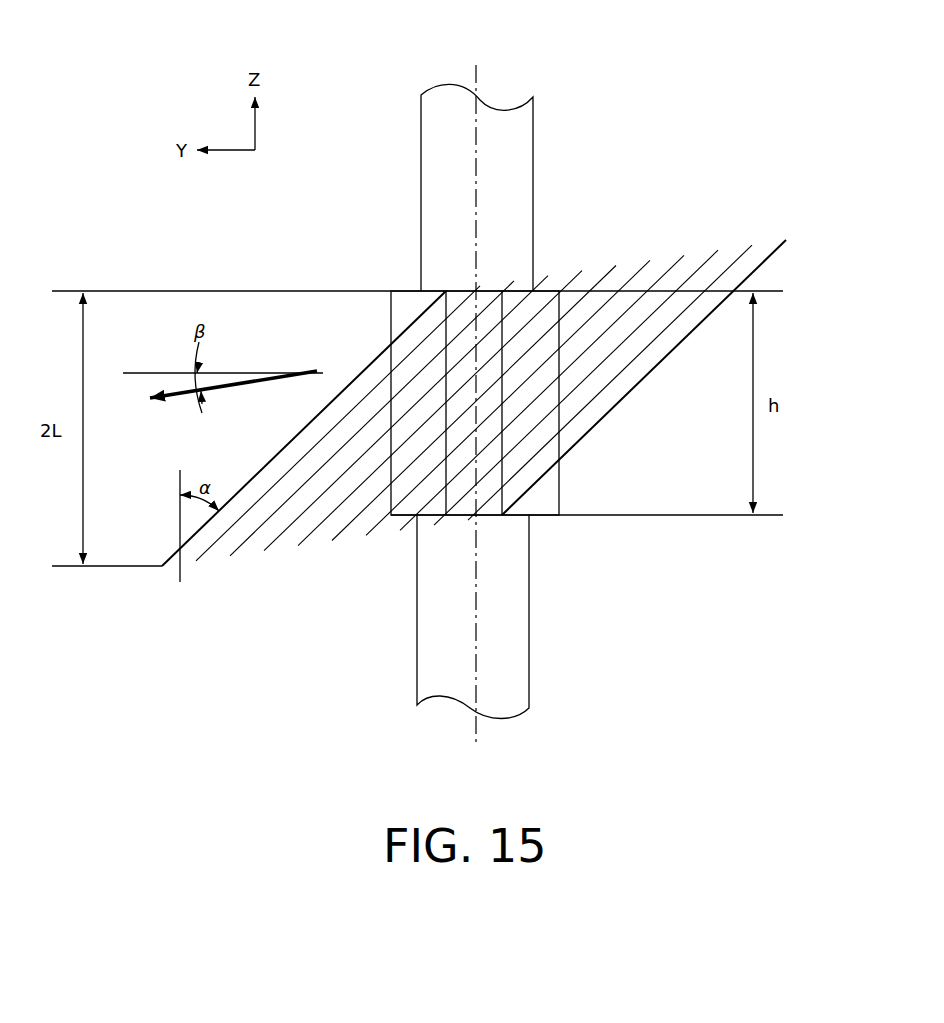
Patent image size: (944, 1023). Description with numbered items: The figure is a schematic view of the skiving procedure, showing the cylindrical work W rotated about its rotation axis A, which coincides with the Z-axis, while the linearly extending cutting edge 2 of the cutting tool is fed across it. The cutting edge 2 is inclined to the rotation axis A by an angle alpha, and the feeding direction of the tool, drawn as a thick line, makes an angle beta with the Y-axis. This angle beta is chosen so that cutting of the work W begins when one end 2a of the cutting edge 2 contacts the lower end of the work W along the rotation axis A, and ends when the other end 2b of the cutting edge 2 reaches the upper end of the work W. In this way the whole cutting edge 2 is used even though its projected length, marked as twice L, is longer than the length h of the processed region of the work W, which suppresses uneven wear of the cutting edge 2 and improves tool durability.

The cutting edge 2 is at (643, 381).
The one end of the cutting edge 2a is at (163, 566).
The other end of the cutting edge 2b is at (446, 290).
The work W is at (410, 152).
The rotation axis A is at (476, 393).